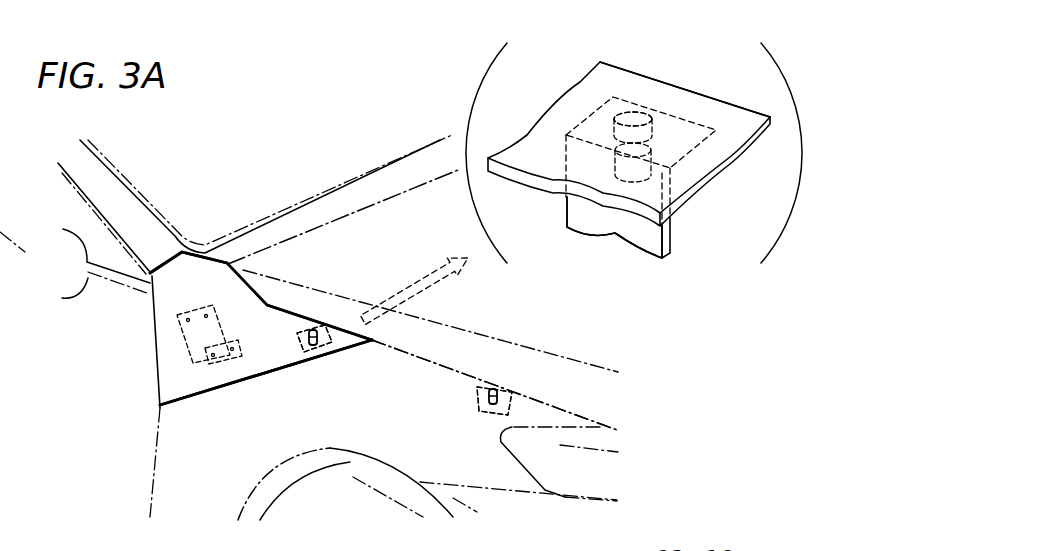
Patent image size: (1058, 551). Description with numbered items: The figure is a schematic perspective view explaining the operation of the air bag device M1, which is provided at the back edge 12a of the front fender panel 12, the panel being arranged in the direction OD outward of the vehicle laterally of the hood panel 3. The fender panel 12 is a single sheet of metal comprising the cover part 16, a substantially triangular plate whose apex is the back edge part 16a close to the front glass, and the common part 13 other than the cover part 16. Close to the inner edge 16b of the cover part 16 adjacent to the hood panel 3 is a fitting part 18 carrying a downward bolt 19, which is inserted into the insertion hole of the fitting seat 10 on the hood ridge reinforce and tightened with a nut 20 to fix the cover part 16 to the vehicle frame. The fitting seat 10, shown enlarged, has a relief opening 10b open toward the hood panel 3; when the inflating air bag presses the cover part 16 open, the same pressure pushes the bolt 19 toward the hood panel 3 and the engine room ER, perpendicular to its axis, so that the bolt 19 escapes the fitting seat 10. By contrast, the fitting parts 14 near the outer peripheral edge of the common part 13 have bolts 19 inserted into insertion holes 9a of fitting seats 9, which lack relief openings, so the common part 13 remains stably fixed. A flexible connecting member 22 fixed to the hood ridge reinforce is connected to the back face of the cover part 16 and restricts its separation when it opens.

The hood panel 3 is at (608, 343).
The fitting seat 9 is at (505, 387).
The insertion hole 9a is at (512, 405).
The fitting seat 10 is at (320, 330).
The relief opening 10b is at (665, 112).
The front fender panel 12 is at (90, 435).
The back edge 12a is at (175, 273).
The common part 13 is at (177, 463).
The fitting part 14 is at (493, 387).
The cover part 16 is at (170, 390).
The back edge part 16a is at (188, 262).
The inner edge 16b is at (282, 327).
The fitting part 18 is at (317, 330).
The bolt 19 is at (474, 263).
The nut 20 is at (490, 412).
The connecting member 22 is at (187, 343).
The air bag device M1 is at (325, 245).
The engine room ER is at (673, 344).
The outward direction OD is at (695, 445).